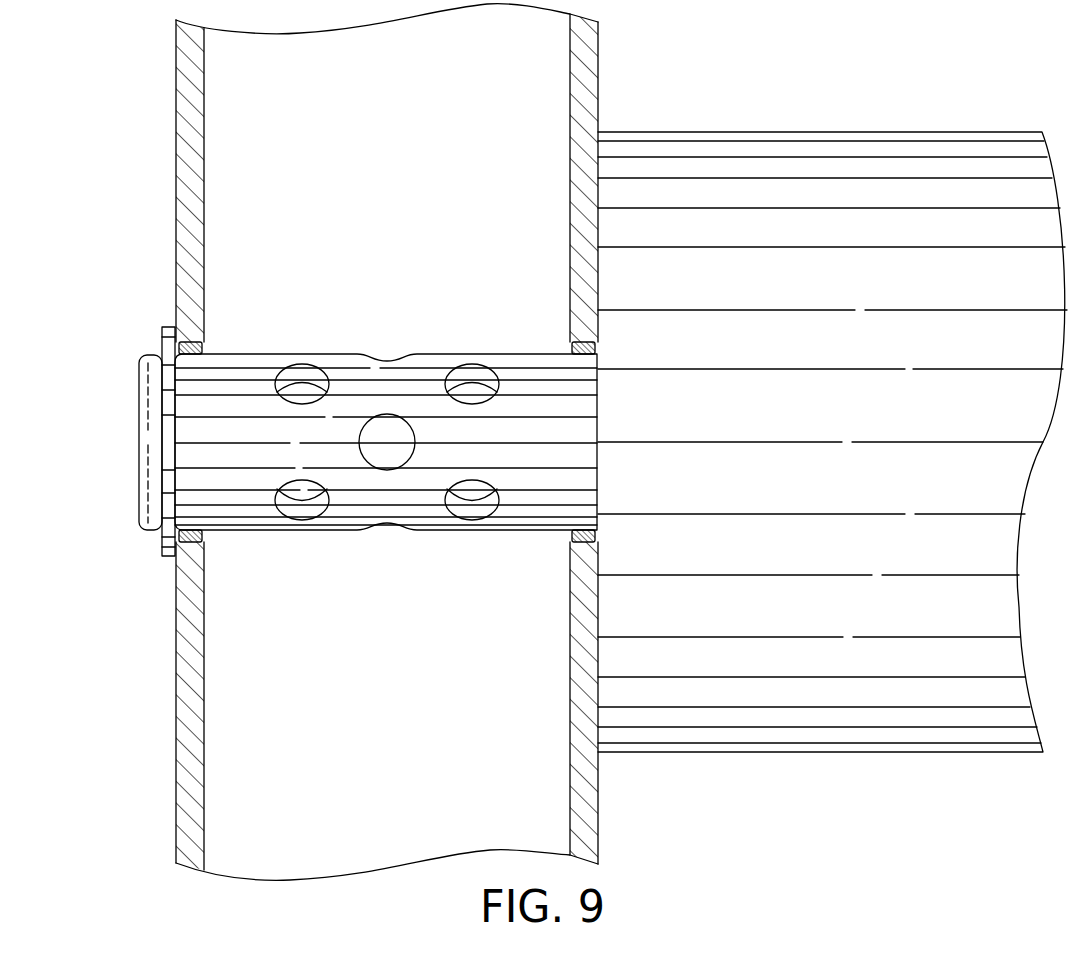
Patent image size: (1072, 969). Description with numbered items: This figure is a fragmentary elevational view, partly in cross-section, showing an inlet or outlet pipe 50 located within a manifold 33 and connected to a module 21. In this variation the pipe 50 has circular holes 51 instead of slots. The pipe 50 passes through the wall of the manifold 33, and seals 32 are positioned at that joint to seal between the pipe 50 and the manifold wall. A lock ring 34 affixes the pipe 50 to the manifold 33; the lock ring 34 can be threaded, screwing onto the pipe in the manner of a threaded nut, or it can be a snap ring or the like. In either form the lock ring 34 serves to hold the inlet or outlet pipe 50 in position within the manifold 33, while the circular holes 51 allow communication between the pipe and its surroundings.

The tube 21 is at (898, 162).
The seals 32 is at (192, 342).
The manifold 33 is at (176, 660).
The lock ring 34 is at (163, 330).
The inlet or outlet pipe 50 is at (386, 377).
The circular holes 51 is at (470, 392).